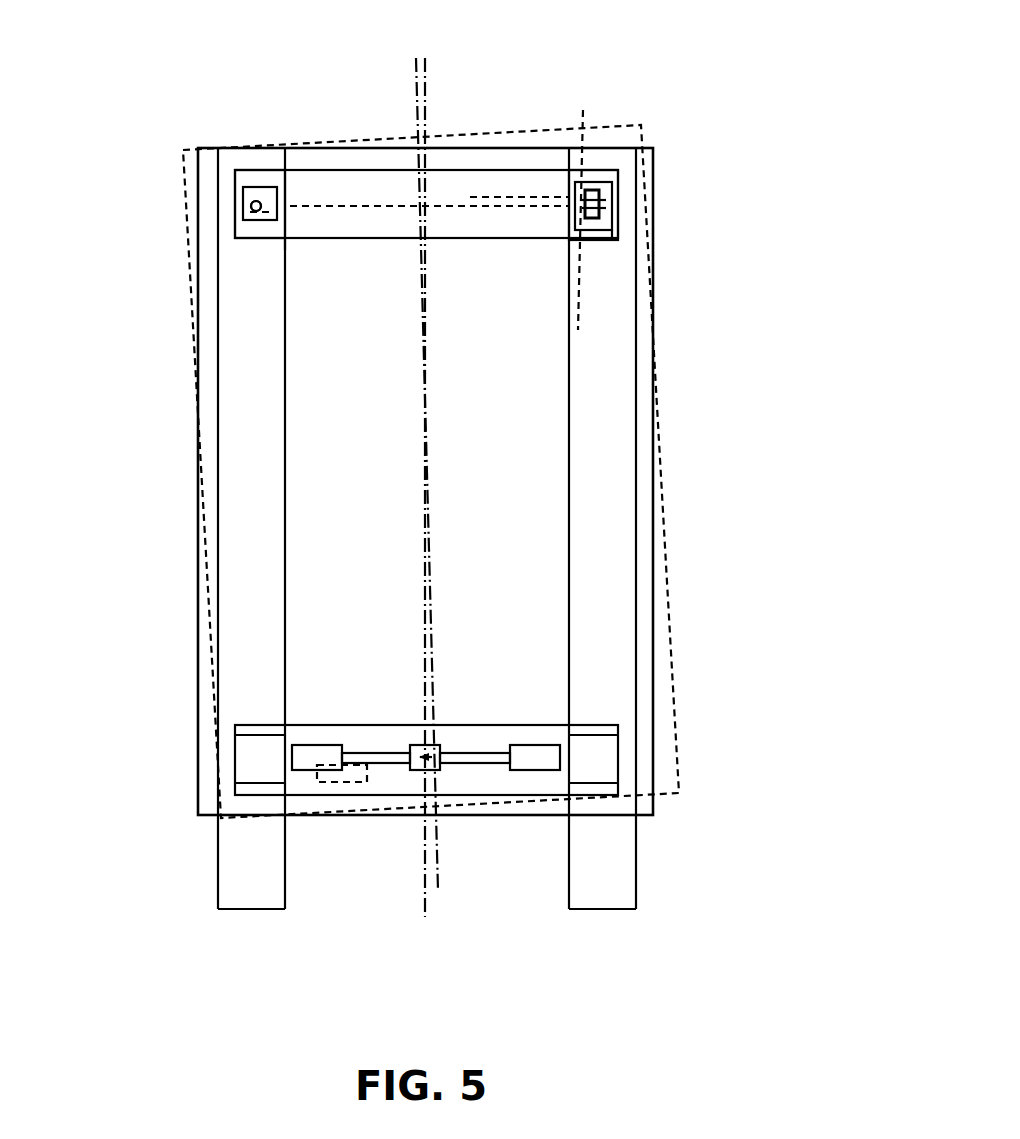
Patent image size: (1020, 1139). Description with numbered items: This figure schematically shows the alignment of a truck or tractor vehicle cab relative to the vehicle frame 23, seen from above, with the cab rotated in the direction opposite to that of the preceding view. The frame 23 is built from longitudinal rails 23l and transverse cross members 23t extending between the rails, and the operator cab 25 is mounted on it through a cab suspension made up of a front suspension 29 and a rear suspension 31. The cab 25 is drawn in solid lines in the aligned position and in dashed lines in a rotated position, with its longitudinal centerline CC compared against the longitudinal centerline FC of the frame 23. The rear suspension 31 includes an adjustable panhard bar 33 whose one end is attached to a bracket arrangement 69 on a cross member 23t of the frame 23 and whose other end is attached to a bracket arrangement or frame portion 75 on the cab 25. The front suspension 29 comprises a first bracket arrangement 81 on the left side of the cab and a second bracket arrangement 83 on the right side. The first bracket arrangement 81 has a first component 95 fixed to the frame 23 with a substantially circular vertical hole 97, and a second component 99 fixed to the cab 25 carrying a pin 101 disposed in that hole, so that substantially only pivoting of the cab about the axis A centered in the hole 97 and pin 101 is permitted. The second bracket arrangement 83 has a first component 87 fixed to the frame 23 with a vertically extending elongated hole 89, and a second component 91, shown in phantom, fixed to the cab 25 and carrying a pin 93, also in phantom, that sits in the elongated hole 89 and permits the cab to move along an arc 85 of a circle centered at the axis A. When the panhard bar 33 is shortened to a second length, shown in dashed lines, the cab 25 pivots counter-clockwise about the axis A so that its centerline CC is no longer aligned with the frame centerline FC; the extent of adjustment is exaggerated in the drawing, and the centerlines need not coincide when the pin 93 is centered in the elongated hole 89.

The frame 23 is at (612, 497).
The longitudinal portions (rails) 23l is at (252, 910).
The transverse portions (cross members) 23t is at (348, 240).
The operator cab 25 is at (190, 308).
The front suspension 29 is at (216, 209).
The rear suspension 31 is at (222, 771).
The adjustable panhard bar 33 is at (392, 778).
The bracket arrangement 69 is at (543, 753).
The bracket arrangement or frame portion 75 is at (306, 760).
The first bracket arrangement 81 is at (238, 187).
The second bracket arrangement 83 is at (566, 178).
The arc 85 is at (580, 112).
The first component of the second bracket arrangement 87 is at (613, 242).
The elongated hole 89 is at (597, 188).
The second component of the second bracket arrangement 91 is at (615, 199).
The pin 93 is at (628, 212).
The first component of the first bracket arrangement 95 is at (262, 240).
The hole 97 is at (267, 165).
The second component of the first bracket arrangement 99 is at (288, 250).
The pin 101 is at (240, 150).
The axis A is at (255, 205).
The frame center line FC is at (427, 118).
The longitudinal centerline of the cab CC is at (414, 110).